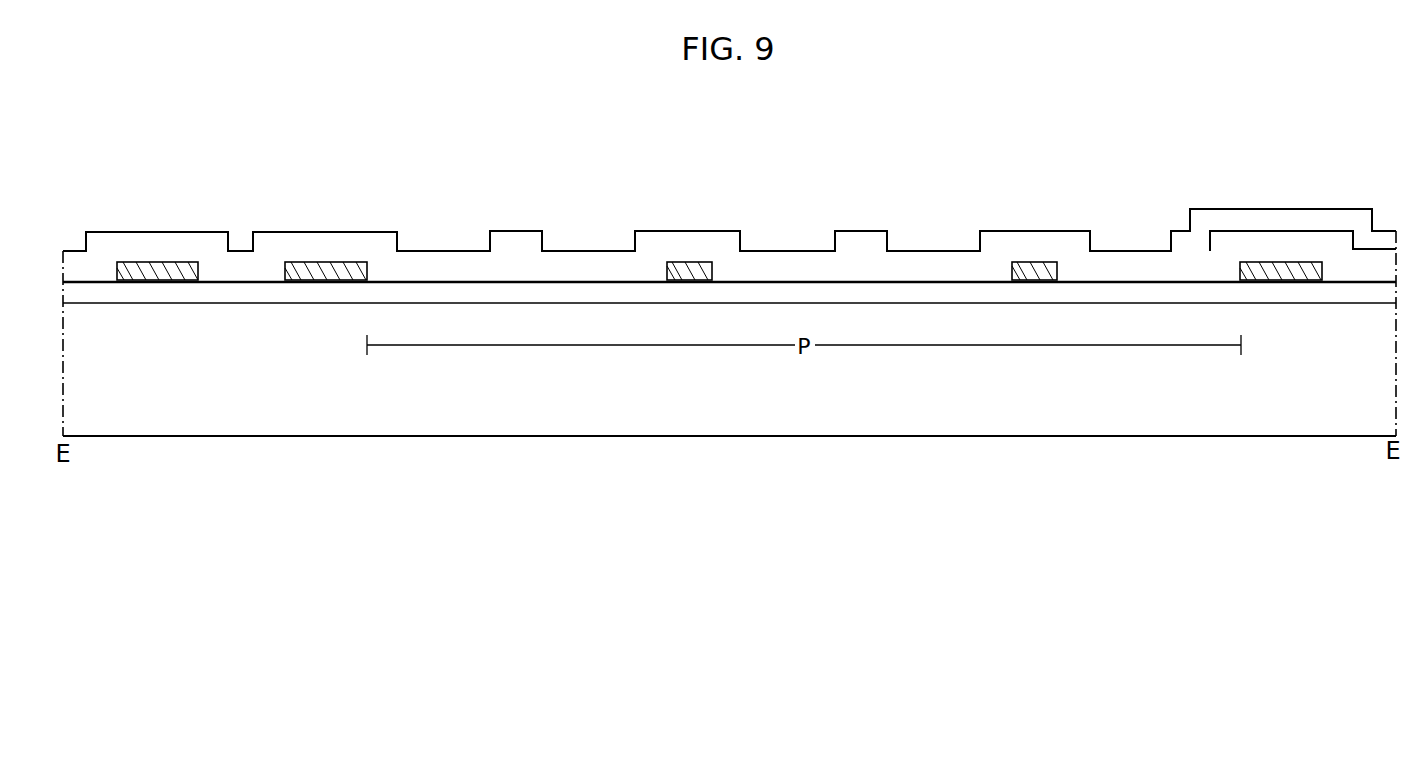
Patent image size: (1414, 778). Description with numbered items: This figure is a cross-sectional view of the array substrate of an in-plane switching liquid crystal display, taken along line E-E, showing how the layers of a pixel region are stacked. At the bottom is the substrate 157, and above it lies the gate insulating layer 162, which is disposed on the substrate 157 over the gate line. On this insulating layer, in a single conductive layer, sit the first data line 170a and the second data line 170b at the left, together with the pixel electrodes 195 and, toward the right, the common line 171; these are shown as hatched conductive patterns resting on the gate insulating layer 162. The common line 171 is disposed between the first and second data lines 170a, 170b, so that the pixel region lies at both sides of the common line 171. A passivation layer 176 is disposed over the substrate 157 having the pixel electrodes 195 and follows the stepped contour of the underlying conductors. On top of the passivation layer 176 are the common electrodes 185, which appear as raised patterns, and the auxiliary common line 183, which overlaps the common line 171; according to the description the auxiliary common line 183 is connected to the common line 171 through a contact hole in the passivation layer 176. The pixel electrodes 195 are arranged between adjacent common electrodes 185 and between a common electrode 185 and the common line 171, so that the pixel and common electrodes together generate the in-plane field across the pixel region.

The substrate 157 is at (1302, 404).
The gate insulating layer 162 is at (442, 295).
The passivation layer 176 is at (590, 267).
The auxiliary common line 183 is at (1333, 215).
The common electrode 185 is at (515, 238).
The second data line 170b is at (158, 267).
The first data line 170a is at (322, 267).
The pixel electrode 195 is at (683, 267).
The common line 171 is at (1283, 267).